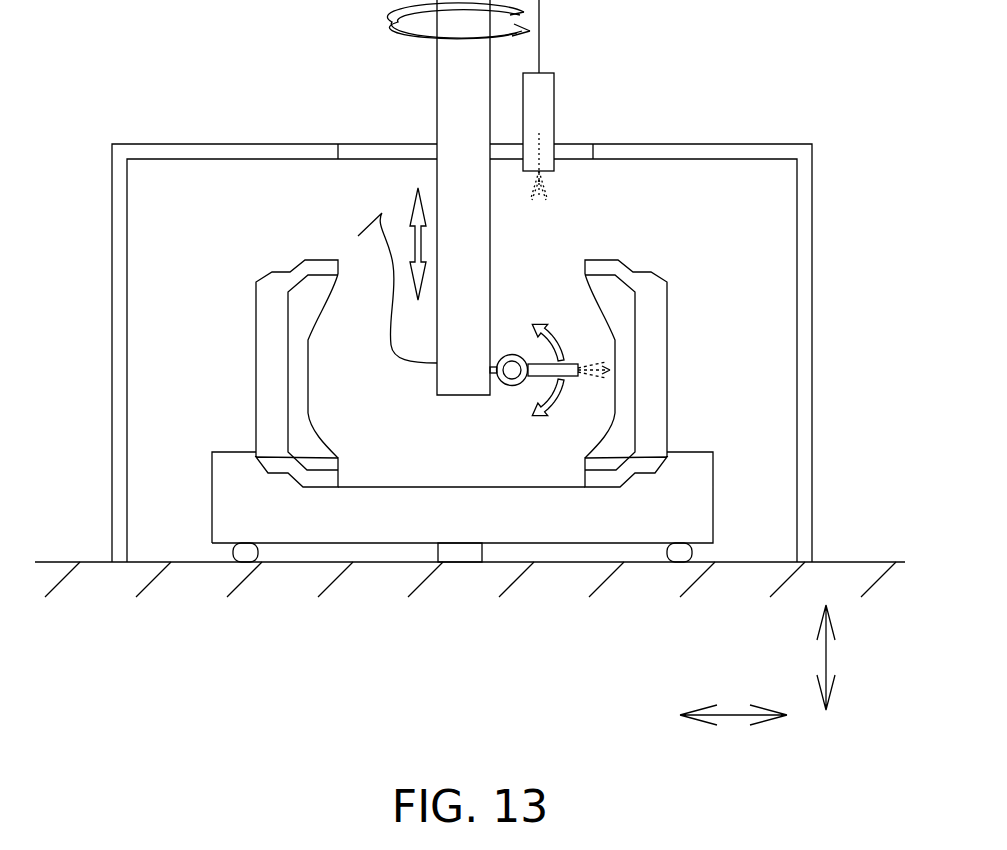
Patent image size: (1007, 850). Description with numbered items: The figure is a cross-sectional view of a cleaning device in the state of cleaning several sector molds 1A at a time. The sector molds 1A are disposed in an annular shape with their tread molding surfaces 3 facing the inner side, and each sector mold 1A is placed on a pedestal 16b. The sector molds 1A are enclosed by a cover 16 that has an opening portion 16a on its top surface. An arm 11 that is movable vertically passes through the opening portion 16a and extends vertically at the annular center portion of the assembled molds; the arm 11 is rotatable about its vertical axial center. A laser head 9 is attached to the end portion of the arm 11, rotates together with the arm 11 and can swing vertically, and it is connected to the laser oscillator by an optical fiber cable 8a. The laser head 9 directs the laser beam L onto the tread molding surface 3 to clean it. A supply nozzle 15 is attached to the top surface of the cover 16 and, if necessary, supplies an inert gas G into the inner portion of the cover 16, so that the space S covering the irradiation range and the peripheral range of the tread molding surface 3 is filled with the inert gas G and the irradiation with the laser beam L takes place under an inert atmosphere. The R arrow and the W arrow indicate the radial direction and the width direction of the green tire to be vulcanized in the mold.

The arm 11 is at (442, 88).
The supply nozzle 15 is at (545, 103).
The cover 16 is at (698, 155).
The opening portion 16a is at (350, 140).
The pedestal 16b is at (228, 458).
The sector mold 1A is at (267, 320).
The tread molding surface 3 is at (308, 367).
The optical fiber cable 8a is at (375, 257).
The laser head 9 is at (543, 373).
The inert gas G is at (540, 212).
The space S is at (567, 298).
The laser beam L is at (588, 377).
The W arrow W is at (841, 657).
The R arrow R is at (733, 701).